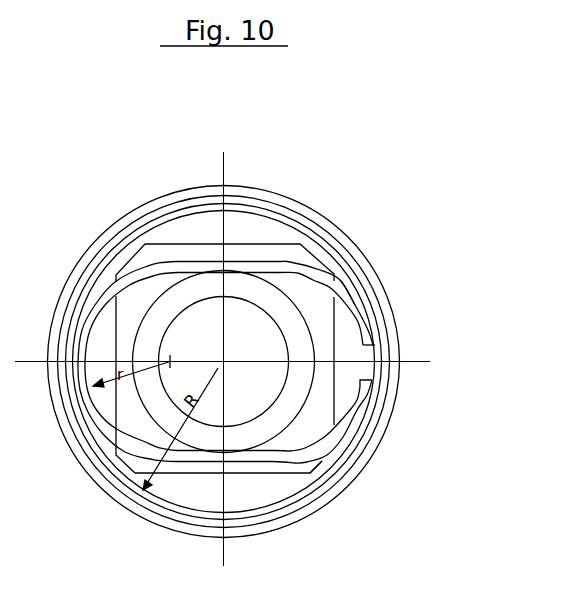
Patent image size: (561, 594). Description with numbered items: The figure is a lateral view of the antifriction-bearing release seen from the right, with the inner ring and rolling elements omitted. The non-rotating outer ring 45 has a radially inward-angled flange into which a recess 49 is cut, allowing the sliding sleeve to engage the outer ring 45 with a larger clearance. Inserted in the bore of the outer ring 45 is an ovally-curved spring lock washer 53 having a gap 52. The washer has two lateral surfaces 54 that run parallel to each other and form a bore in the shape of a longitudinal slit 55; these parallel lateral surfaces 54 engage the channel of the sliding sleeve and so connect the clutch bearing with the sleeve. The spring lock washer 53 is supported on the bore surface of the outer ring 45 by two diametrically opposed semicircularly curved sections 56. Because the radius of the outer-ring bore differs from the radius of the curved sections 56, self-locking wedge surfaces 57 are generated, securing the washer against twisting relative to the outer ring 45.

The outer ring 45 is at (160, 208).
The recess 49 is at (168, 247).
The gap 52 is at (372, 352).
The spring lock washer 53 is at (323, 459).
The lateral surfaces 54 is at (283, 282).
The longitudinal slit 55 is at (343, 408).
The semicircularly curved sections 56 is at (350, 298).
The wedge surfaces 57 is at (345, 288).